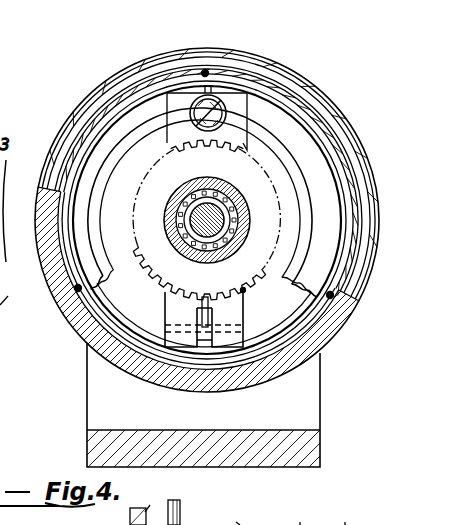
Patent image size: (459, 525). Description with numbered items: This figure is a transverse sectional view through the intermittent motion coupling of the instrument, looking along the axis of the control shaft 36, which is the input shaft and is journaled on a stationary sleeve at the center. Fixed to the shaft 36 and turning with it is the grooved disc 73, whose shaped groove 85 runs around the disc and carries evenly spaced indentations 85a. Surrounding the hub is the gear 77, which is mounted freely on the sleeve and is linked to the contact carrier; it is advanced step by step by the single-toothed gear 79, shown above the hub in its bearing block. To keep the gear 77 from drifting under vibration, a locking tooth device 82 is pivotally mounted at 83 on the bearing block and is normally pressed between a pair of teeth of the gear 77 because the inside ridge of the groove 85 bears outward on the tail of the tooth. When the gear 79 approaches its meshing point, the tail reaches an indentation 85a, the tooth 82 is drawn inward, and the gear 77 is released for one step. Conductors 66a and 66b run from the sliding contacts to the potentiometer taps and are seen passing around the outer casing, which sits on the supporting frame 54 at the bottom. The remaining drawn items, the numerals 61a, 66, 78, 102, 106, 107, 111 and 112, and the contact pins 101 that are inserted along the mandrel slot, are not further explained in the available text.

The control shaft 36 is at (222, 223).
The supporting frame 54 is at (92, 441).
The hub bearing 61a is at (185, 210).
The casing 66 is at (72, 292).
The conductor 66a is at (206, 69).
The conductor 66b is at (333, 300).
The grooved disc 73 is at (280, 165).
The gear 77 is at (198, 171).
The outer ring 78 is at (275, 67).
The single-toothed gear 79 is at (223, 128).
The locking tooth device 82 is at (243, 291).
The pivot mounting 83 is at (170, 327).
The shaped groove 85 is at (310, 180).
The indentation 85a is at (300, 262).
The contact pin 101 is at (232, 515).
The member 102 is at (130, 513).
The member 106 is at (195, 524).
The member 107 is at (150, 505).
The member 111 is at (330, 524).
The member 112 is at (305, 516).